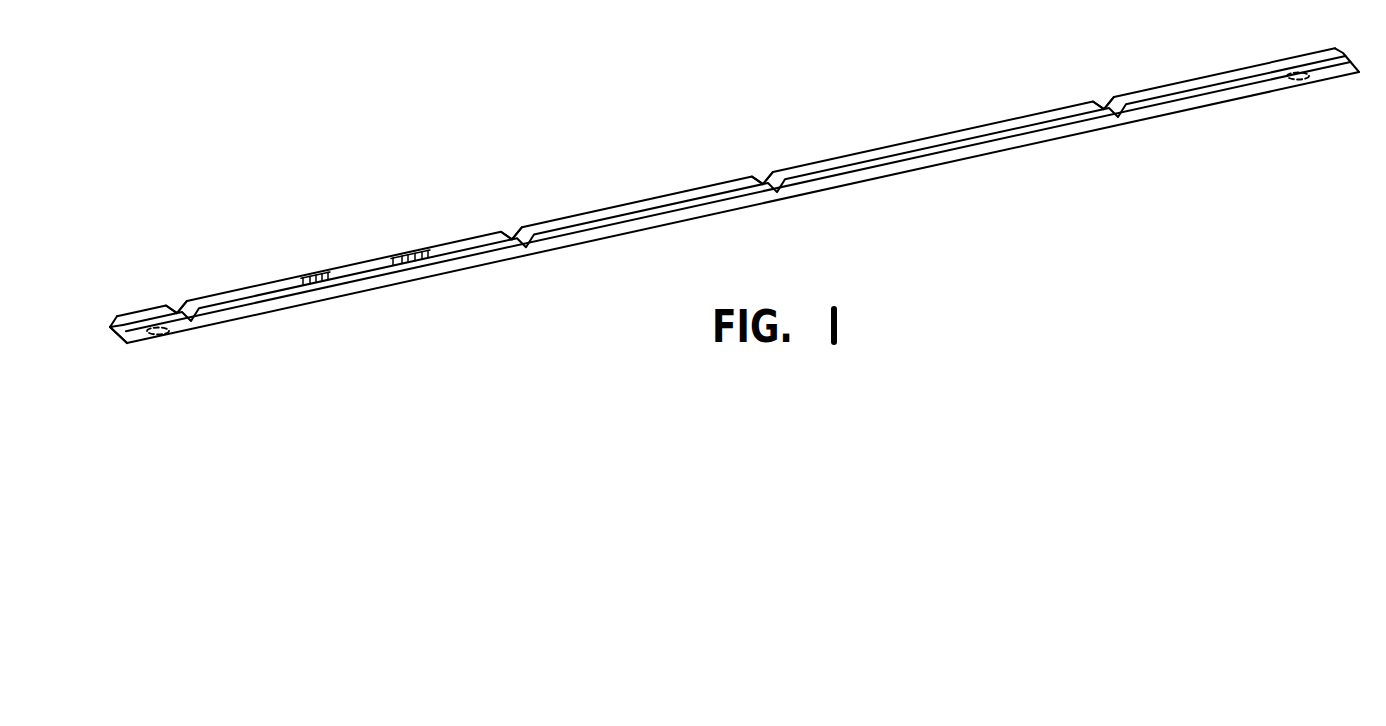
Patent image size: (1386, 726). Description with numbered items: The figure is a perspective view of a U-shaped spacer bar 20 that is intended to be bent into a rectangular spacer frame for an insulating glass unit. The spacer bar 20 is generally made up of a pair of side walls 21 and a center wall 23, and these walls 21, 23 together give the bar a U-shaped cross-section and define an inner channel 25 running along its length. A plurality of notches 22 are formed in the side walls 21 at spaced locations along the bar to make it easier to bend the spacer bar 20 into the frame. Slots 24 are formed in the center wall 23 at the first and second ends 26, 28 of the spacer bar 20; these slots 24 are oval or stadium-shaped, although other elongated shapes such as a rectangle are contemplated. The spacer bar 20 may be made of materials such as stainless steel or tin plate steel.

The spacer bar 20 is at (386, 216).
The side walls 21 is at (613, 214).
The notches 22 is at (177, 312).
The center wall 23 is at (117, 337).
The slots 24 is at (160, 336).
The inner channel 25 is at (697, 186).
The first end 26 is at (130, 345).
The second end 28 is at (1358, 72).